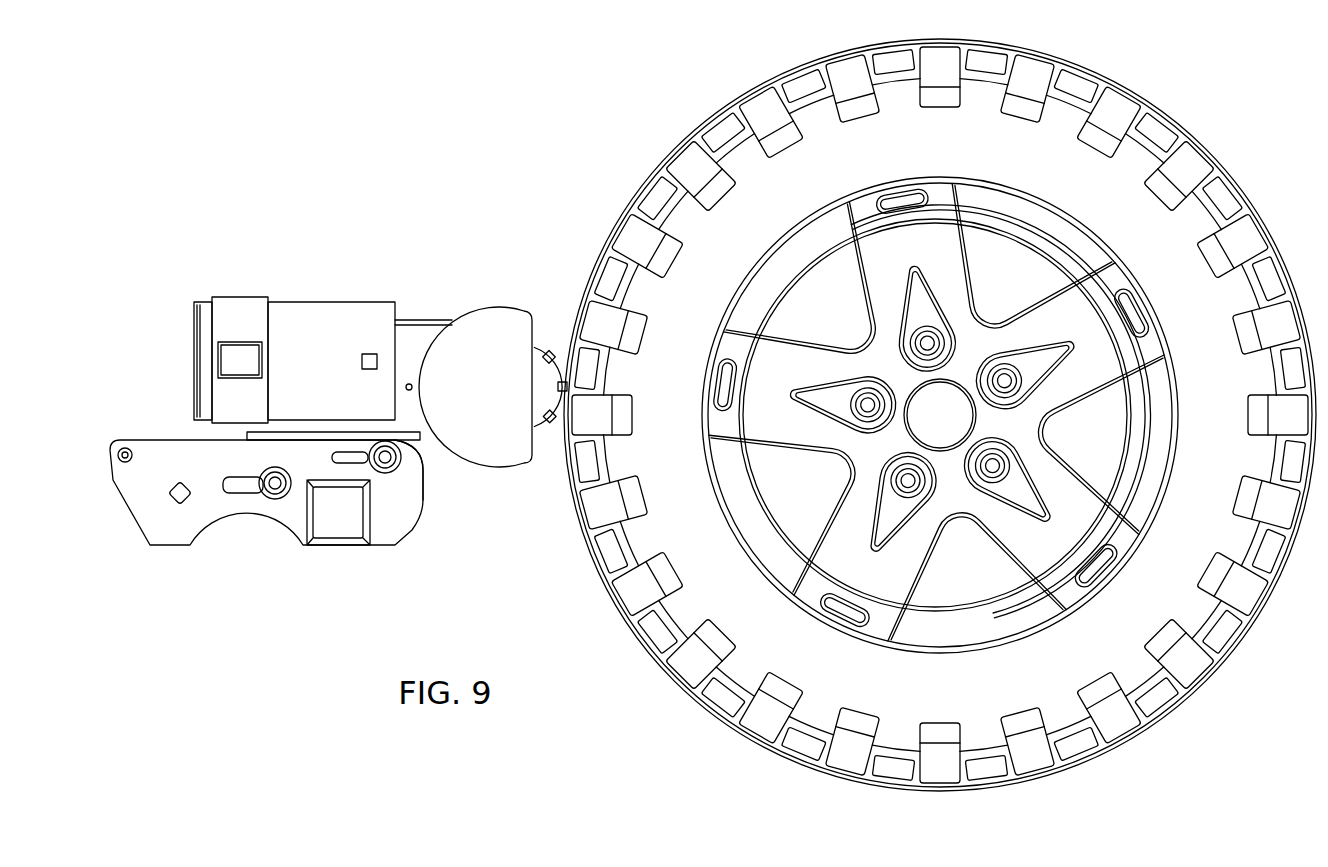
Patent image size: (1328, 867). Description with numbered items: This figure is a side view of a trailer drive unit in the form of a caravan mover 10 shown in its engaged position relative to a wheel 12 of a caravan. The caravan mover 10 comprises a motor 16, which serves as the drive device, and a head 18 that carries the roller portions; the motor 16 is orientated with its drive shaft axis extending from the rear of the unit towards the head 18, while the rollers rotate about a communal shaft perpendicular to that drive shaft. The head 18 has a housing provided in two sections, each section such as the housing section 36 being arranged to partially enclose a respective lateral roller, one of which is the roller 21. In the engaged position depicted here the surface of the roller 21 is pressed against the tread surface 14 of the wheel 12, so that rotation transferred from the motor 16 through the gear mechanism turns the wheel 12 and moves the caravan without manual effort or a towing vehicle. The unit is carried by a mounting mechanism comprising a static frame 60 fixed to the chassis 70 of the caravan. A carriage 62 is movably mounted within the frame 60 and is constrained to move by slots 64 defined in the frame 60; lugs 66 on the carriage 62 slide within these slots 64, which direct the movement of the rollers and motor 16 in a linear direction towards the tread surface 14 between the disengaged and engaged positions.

The caravan mover 10 is at (155, 298).
The wheel 12 is at (780, 192).
The tread surface 14 is at (663, 180).
The motor 16 is at (323, 313).
The head 18 is at (494, 283).
The lateral roller 21 is at (540, 435).
The head housing section 36 is at (485, 437).
The static frame 60 is at (163, 523).
The carriage 62 is at (424, 478).
The slots 64 is at (332, 453).
The lugs 66 is at (390, 443).
The chassis 70 is at (337, 548).